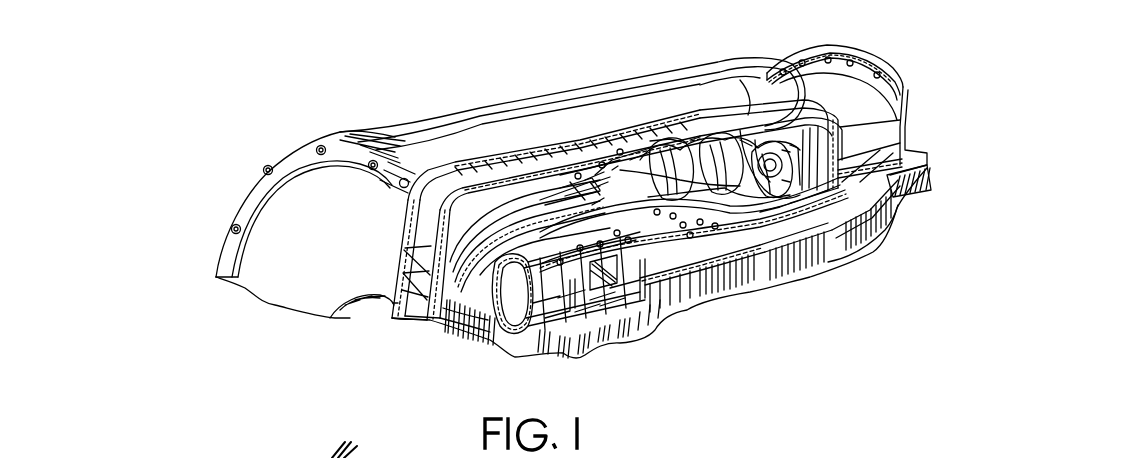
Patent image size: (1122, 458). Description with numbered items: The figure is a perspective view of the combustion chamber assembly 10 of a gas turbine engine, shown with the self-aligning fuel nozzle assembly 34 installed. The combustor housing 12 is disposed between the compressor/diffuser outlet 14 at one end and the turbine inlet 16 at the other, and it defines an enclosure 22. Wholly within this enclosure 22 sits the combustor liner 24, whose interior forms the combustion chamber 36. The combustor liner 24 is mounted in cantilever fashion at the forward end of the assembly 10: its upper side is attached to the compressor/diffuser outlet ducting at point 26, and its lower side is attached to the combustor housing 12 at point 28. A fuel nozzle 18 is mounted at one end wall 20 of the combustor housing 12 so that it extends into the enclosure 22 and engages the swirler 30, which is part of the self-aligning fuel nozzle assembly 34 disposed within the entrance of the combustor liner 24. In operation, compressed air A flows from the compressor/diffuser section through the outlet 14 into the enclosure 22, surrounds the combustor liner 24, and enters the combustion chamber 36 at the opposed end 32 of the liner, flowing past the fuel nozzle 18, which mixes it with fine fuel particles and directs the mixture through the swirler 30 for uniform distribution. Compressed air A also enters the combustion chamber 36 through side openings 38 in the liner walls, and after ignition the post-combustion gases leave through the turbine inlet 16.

The combustion chamber assembly 10 is at (600, 66).
The combustor housing 12 is at (692, 104).
The compressor/diffuser outlet 14 is at (407, 237).
The turbine inlet 16 is at (475, 290).
The fuel nozzle 18 is at (816, 128).
The end wall 20 is at (848, 133).
The enclosure 22 is at (744, 116).
The combustor liner 24 is at (637, 163).
The mounting point 26 is at (552, 177).
The mounting point 28 is at (535, 312).
The swirler 30 is at (766, 192).
The opposed end 32 is at (790, 185).
The self-aligning fuel nozzle assembly 34 is at (816, 150).
The combustion chamber 36 is at (613, 173).
The side openings 38 is at (608, 167).
The compressed air A is at (409, 310).